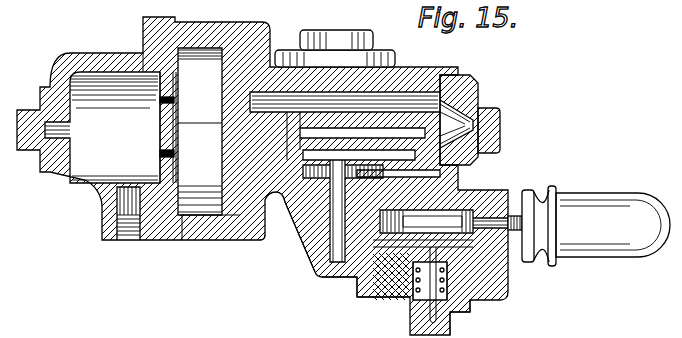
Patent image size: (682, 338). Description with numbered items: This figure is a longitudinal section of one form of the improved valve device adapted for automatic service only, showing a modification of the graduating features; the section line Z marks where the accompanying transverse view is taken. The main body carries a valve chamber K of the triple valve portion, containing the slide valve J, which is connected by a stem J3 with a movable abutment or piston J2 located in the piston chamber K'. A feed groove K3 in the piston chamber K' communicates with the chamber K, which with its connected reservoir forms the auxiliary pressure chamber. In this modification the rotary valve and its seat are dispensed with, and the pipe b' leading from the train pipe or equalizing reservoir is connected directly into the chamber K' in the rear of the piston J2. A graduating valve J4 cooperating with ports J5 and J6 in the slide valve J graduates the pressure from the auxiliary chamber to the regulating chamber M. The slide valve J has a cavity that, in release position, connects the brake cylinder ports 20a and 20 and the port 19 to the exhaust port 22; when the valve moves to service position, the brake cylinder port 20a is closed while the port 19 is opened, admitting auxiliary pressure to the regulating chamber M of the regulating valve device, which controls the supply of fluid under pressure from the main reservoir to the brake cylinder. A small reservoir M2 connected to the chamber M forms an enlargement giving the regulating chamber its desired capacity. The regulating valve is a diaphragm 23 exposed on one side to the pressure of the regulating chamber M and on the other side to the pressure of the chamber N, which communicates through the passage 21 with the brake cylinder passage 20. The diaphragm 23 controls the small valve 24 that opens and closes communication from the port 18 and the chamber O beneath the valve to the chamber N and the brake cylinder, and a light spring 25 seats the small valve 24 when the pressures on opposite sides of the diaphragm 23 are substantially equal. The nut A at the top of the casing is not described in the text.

The nut on valve casing A is at (338, 30).
The slide valve J is at (470, 184).
The piston J2 is at (222, 123).
The stem J3 is at (452, 94).
The graduating valve J4 is at (248, 240).
The port J5 is at (355, 115).
The port J6 is at (473, 160).
The valve chamber K is at (497, 130).
The piston chamber K' is at (133, 142).
The feed groove K3 is at (222, 80).
The regulating chamber M is at (422, 223).
The small reservoir M2 is at (526, 236).
The chamber N is at (355, 282).
The chamber O is at (413, 318).
The section line Z is at (337, 282).
The pipe b' is at (112, 233).
The port 18 is at (400, 313).
The port 19 is at (323, 268).
The brake cylinder port 20 is at (336, 211).
The brake cylinder port 20a is at (287, 240).
The passage 21 is at (333, 286).
The exhaust port 22 is at (330, 186).
The diaphragm 23 is at (440, 243).
The small valve 24 is at (395, 300).
The light spring 25 is at (468, 306).